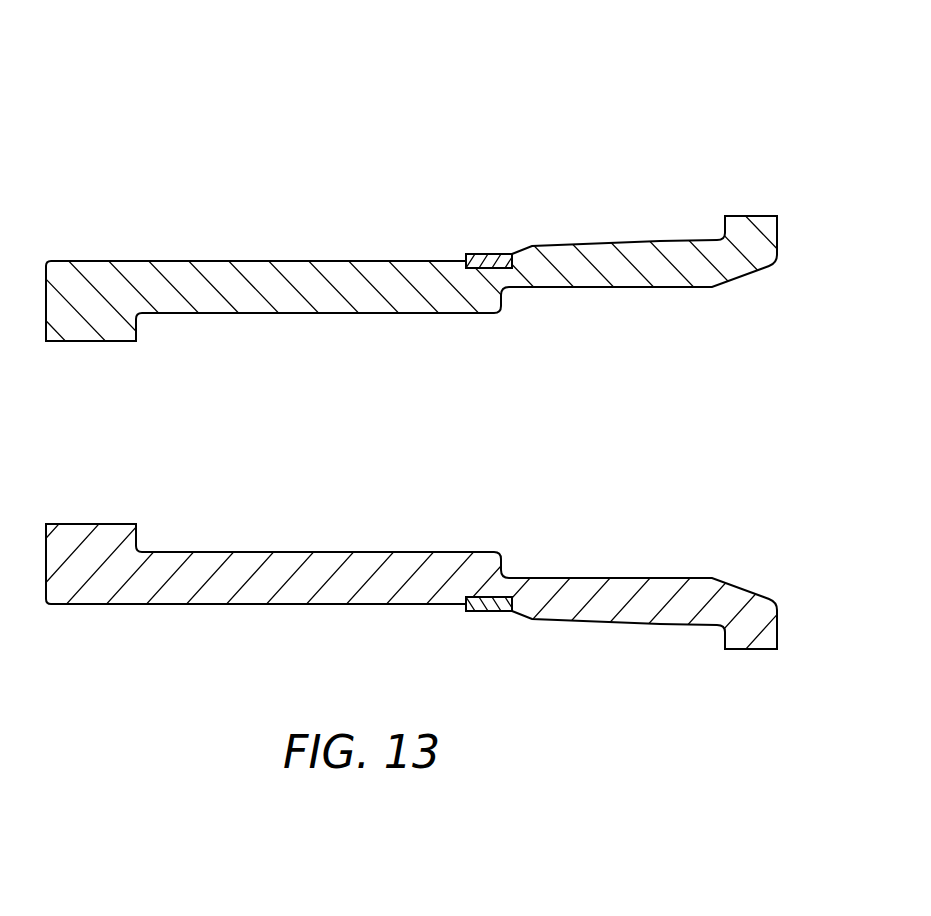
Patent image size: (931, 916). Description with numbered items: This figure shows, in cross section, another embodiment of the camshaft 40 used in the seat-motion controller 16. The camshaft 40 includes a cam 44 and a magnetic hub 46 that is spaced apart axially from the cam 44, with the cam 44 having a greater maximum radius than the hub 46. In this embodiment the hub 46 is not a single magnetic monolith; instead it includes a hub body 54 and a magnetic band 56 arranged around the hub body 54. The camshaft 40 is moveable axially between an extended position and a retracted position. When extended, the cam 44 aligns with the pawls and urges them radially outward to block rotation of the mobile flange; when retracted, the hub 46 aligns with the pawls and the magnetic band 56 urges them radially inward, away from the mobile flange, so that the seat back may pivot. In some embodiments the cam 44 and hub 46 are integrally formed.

The seat-motion controller 16 is at (453, 343).
The camshaft 40 is at (124, 259).
The magnetic hub 46 is at (317, 259).
The hub body 54 is at (481, 316).
The magnetic band 56 is at (492, 252).
The cam 44 is at (662, 238).